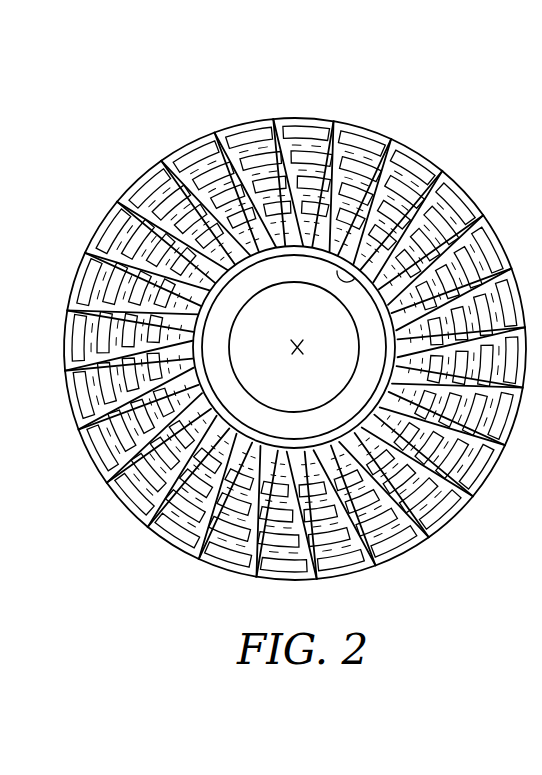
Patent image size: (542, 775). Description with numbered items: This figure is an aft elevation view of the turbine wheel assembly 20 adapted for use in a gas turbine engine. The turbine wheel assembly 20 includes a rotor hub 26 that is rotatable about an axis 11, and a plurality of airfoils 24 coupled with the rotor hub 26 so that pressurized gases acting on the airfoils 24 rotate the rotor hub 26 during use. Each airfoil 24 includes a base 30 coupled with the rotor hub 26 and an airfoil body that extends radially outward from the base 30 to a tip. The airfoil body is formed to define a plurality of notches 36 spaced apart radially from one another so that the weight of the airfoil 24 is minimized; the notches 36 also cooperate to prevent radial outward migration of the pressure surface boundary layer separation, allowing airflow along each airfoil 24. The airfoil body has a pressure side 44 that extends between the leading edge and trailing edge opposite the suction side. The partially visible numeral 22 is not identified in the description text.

The turbine wheel assembly 20 is at (132, 110).
The airfoil 24 is at (253, 120).
The pressure side 44 is at (120, 212).
The notch 36 is at (101, 240).
The base 30 is at (410, 247).
The axis 11 is at (300, 348).
The rotor hub 26 is at (328, 414).
The flap 22 is at (456, 205).